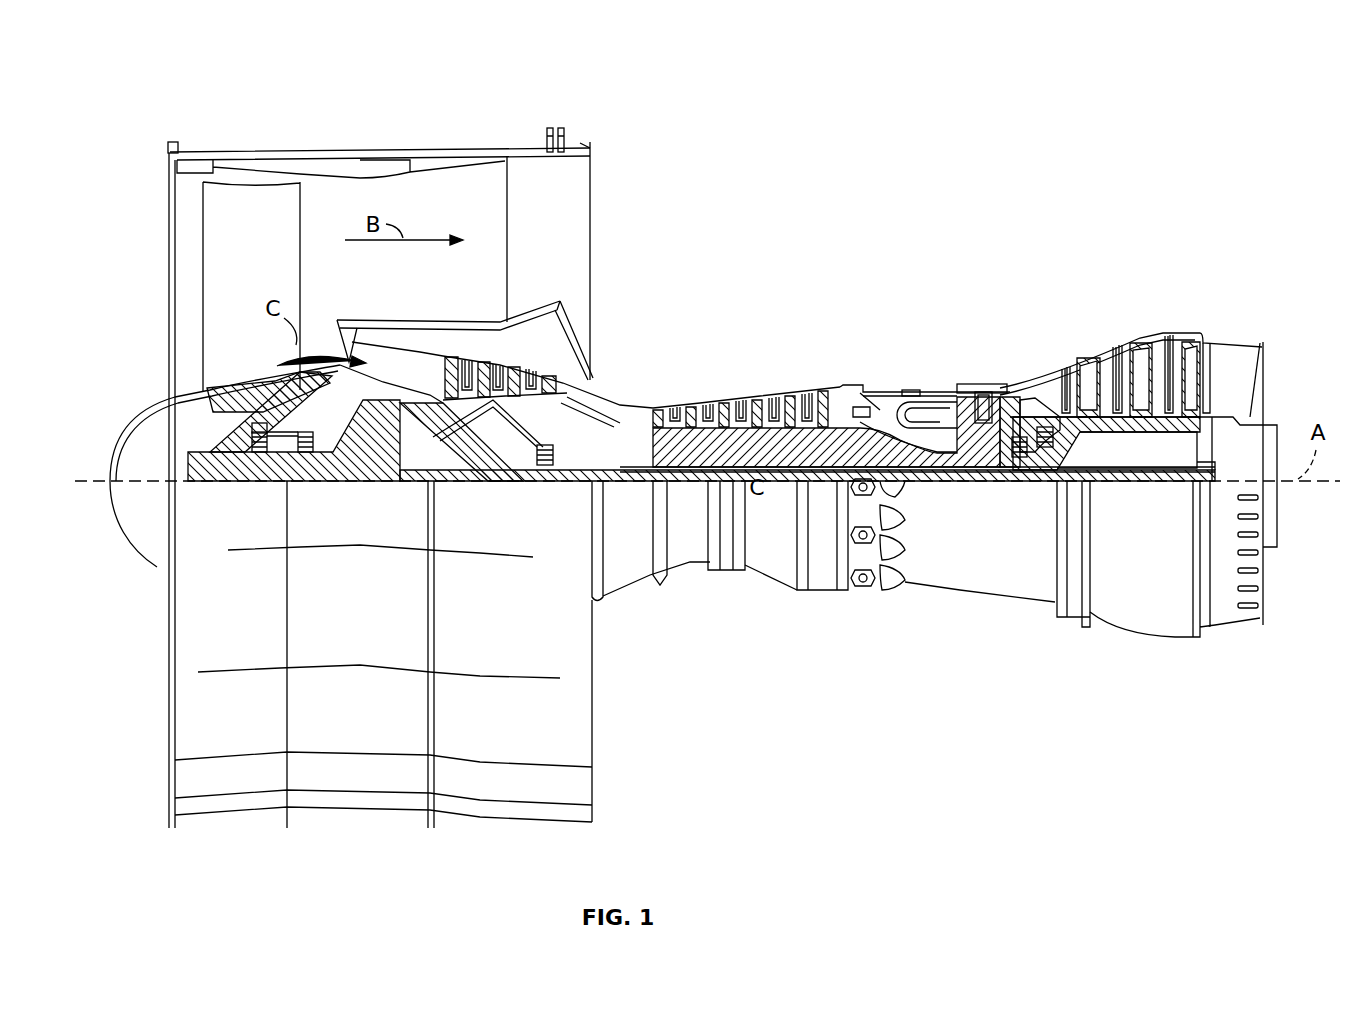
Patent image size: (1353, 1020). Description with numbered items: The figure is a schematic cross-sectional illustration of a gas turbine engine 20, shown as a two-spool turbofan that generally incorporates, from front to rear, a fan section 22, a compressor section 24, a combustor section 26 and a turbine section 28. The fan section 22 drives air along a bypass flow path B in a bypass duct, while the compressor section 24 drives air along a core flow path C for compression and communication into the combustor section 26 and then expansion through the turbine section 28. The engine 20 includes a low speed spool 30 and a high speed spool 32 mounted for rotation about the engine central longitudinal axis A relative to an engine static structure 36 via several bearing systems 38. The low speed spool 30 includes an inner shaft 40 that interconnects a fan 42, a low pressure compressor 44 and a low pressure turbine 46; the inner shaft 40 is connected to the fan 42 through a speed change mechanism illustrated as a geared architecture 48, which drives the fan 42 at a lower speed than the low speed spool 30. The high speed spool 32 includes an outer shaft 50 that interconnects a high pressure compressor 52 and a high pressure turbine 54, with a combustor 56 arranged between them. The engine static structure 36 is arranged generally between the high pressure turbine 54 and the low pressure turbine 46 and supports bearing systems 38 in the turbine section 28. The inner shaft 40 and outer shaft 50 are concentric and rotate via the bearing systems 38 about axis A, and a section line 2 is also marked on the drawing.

The section line 2- 2 is at (988, 472).
The gas turbine engine 20 is at (1056, 186).
The fan section 22 is at (153, 118).
The compressor section 24 is at (860, 263).
The combustor section 26 is at (955, 270).
The turbine section 28 is at (1208, 270).
The low speed spool 30 is at (779, 494).
The high speed spool 32 is at (857, 396).
The engine static structure 36 is at (821, 596).
The bearing systems 38 is at (263, 452).
The inner shaft 40 is at (613, 473).
The fan 42 is at (250, 267).
The low pressure compressor 44 is at (512, 365).
The low pressure turbine 46 is at (1132, 343).
The geared architecture 48 is at (383, 458).
The outer shaft 50 is at (940, 460).
The high pressure compressor 52 is at (752, 450).
The high pressure turbine 54 is at (988, 390).
The combustor 56 is at (935, 402).